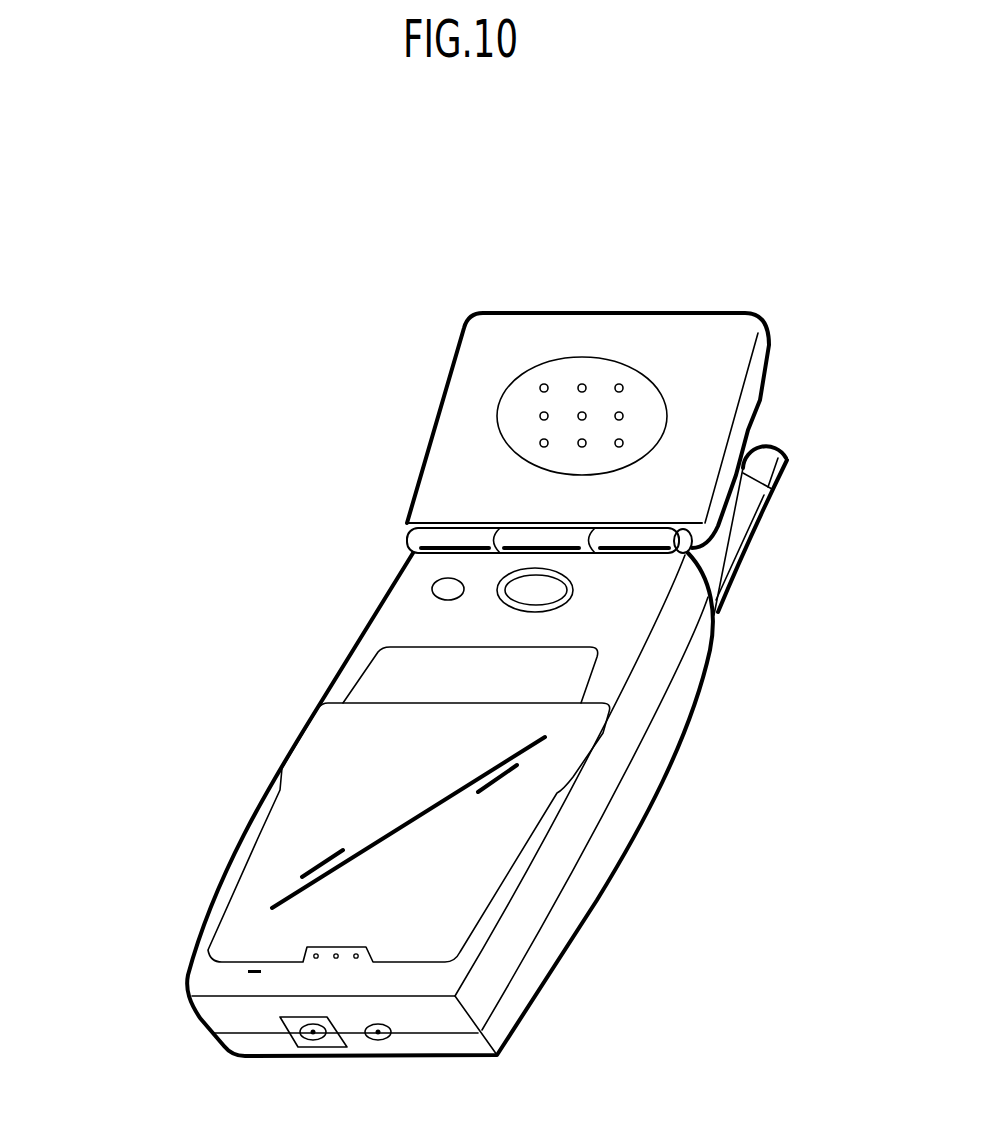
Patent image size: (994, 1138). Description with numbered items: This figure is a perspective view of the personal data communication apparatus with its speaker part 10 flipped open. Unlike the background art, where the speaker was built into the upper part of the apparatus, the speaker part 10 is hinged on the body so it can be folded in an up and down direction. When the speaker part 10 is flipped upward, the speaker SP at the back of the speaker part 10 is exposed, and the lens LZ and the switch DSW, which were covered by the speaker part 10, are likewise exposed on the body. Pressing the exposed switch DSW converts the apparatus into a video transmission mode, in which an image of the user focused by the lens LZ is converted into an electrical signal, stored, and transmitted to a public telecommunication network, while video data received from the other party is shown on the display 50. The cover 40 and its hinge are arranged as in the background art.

The speaker part 10 is at (755, 376).
The speaker SP is at (590, 373).
The switch DSW is at (432, 590).
The lens LZ is at (527, 597).
The display 50 is at (563, 672).
The cover 40 is at (262, 876).